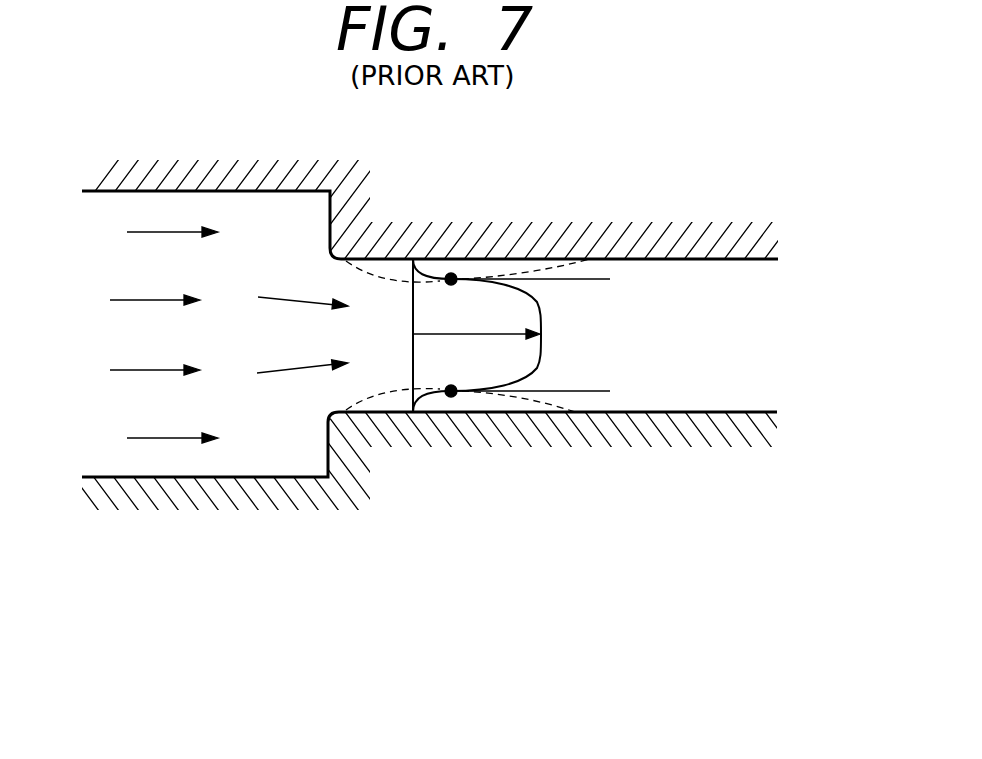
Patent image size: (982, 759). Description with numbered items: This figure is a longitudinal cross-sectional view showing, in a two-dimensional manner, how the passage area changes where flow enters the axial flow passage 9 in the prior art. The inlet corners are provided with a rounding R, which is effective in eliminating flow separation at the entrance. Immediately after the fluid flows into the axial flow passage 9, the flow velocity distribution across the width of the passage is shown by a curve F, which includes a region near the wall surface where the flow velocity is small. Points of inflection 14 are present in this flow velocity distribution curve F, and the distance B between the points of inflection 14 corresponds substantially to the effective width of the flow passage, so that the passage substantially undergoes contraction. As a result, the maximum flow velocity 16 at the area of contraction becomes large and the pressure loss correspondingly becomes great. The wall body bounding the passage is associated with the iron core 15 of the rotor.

The axial flow passage 9 is at (675, 352).
The points of inflection 14 is at (451, 279).
The iron core of the rotor 15 is at (358, 467).
The maximum flow velocity 16 is at (497, 337).
The rounding R is at (323, 264).
The flow velocity distribution curve F is at (540, 305).
The distance between points of inflection B is at (593, 293).